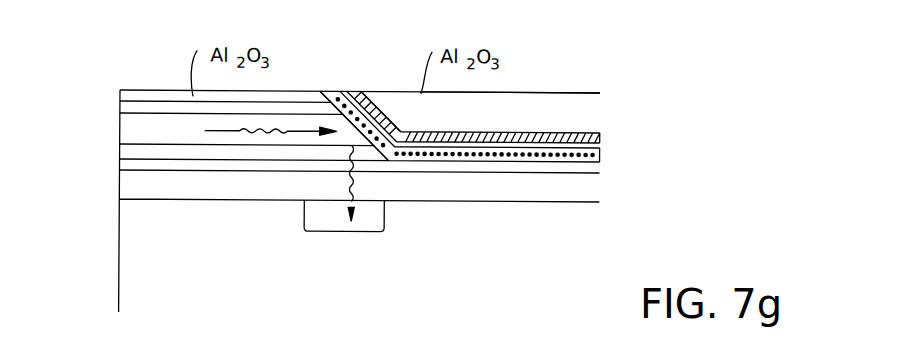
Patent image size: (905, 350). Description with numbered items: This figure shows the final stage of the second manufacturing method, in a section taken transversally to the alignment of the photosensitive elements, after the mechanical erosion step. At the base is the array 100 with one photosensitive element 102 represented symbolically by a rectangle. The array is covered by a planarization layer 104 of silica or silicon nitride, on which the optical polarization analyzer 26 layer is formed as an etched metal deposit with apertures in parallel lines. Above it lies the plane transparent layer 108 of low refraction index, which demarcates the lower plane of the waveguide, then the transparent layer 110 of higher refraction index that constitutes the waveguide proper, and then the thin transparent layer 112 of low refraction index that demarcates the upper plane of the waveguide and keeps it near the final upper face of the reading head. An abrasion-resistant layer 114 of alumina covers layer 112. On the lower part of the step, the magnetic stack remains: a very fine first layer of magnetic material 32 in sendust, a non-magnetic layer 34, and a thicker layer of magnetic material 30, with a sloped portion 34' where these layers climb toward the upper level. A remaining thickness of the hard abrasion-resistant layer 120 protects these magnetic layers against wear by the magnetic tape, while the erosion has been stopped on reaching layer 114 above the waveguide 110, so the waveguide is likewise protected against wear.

The array 100 is at (137, 252).
The photosensitive element 102 is at (375, 212).
The planarization layer 104 is at (123, 186).
The optical polarization analyzer layer 26 is at (122, 168).
The plane transparent layer with low refraction index 108 is at (123, 153).
The transparent layer with higher refraction index 110 is at (128, 130).
The transparent layer with low refraction index 112 is at (120, 102).
The abrasion-resistant layer 114 is at (120, 90).
The hard abrasion-resistant layer 120 is at (575, 105).
The thicker layer of magnetic material 30 is at (592, 130).
The first layer of magnetic material 32 is at (600, 156).
The non-magnetic layer 34 is at (507, 123).
The sloped portion of contact 34' is at (361, 90).